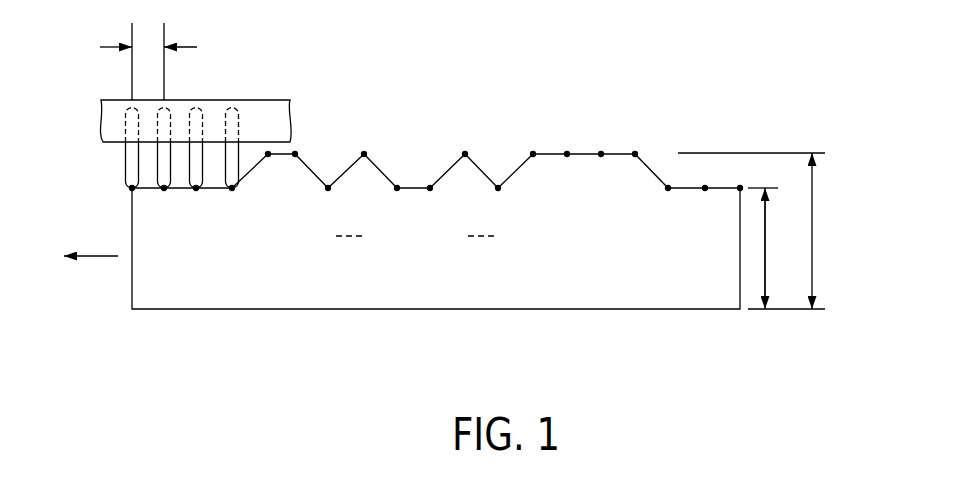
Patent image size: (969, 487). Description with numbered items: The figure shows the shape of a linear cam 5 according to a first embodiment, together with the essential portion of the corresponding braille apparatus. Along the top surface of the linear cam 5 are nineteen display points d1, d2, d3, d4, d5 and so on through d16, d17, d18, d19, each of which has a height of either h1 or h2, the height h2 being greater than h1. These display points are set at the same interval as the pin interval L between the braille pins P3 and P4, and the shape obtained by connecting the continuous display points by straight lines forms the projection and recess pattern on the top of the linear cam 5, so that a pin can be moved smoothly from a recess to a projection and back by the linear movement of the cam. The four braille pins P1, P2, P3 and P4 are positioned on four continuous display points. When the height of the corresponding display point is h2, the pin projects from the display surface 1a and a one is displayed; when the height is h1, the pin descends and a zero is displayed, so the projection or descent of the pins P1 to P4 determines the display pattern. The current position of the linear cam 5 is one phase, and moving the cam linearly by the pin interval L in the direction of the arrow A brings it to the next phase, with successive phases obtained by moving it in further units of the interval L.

The display surface 1a is at (287, 100).
The braille pin P1 is at (130, 158).
The braille pin P2 is at (167, 148).
The braille pin P3 is at (197, 150).
The braille pin P4 is at (235, 152).
The pin interval L is at (148, 61).
The linear cam 5 is at (687, 309).
The display point d1 is at (134, 191).
The display point d2 is at (165, 191).
The display point d3 is at (198, 191).
The display point d4 is at (235, 191).
The display point d5 is at (269, 157).
The display point d16 is at (633, 156).
The display point d17 is at (667, 190).
The display point d18 is at (704, 190).
The display point d19 is at (738, 190).
The height h1 is at (773, 248).
The height h2 is at (763, 231).
The arrow A is at (82, 239).